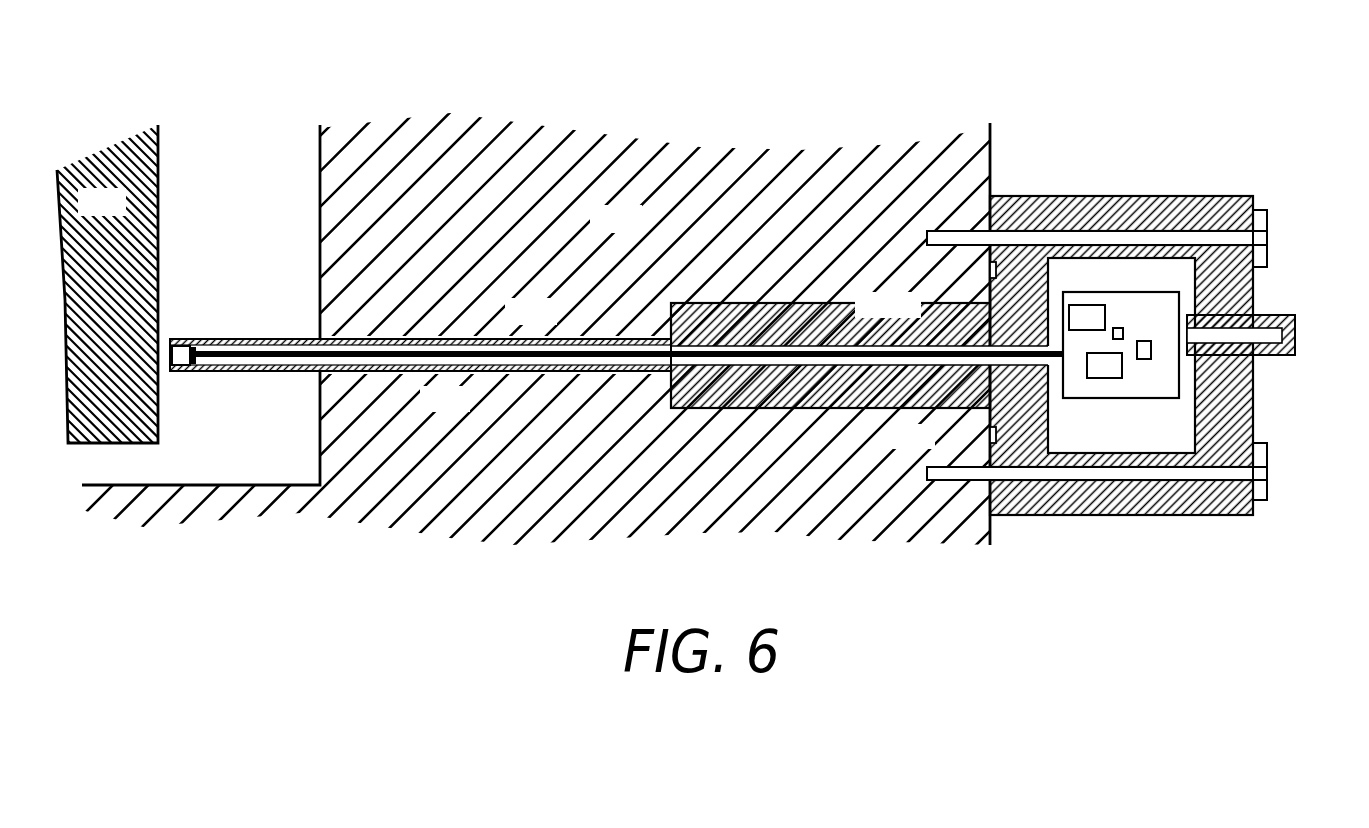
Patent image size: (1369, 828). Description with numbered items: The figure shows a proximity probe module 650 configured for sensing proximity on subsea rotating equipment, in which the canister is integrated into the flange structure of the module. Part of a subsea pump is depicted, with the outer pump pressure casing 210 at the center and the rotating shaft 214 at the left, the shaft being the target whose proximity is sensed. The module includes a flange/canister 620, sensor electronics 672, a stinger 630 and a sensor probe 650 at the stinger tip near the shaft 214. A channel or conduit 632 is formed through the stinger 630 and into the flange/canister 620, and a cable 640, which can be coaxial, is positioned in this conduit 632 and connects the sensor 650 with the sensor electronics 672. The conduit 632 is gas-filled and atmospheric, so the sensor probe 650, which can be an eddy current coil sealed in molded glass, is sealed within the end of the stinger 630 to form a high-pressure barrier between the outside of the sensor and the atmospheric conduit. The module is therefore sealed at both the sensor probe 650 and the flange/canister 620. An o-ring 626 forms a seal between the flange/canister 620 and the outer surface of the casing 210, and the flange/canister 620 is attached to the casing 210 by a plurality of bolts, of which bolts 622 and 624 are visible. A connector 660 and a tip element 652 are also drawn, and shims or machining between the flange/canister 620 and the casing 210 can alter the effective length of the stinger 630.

The outer pump pressure casing 210 is at (637, 230).
The rotating shaft 214 is at (124, 214).
The flange/canister 620 is at (1057, 207).
The bolt 622 is at (1258, 240).
The bolt 624 is at (933, 482).
The o-ring 626 is at (990, 440).
The stinger 630 is at (563, 343).
The conduit 632 is at (492, 360).
The cable 640 is at (846, 357).
The probe module 650 is at (193, 363).
The sensor tip 652 is at (177, 339).
The connector 660 is at (1267, 337).
The sensor electronics 672 is at (1098, 390).